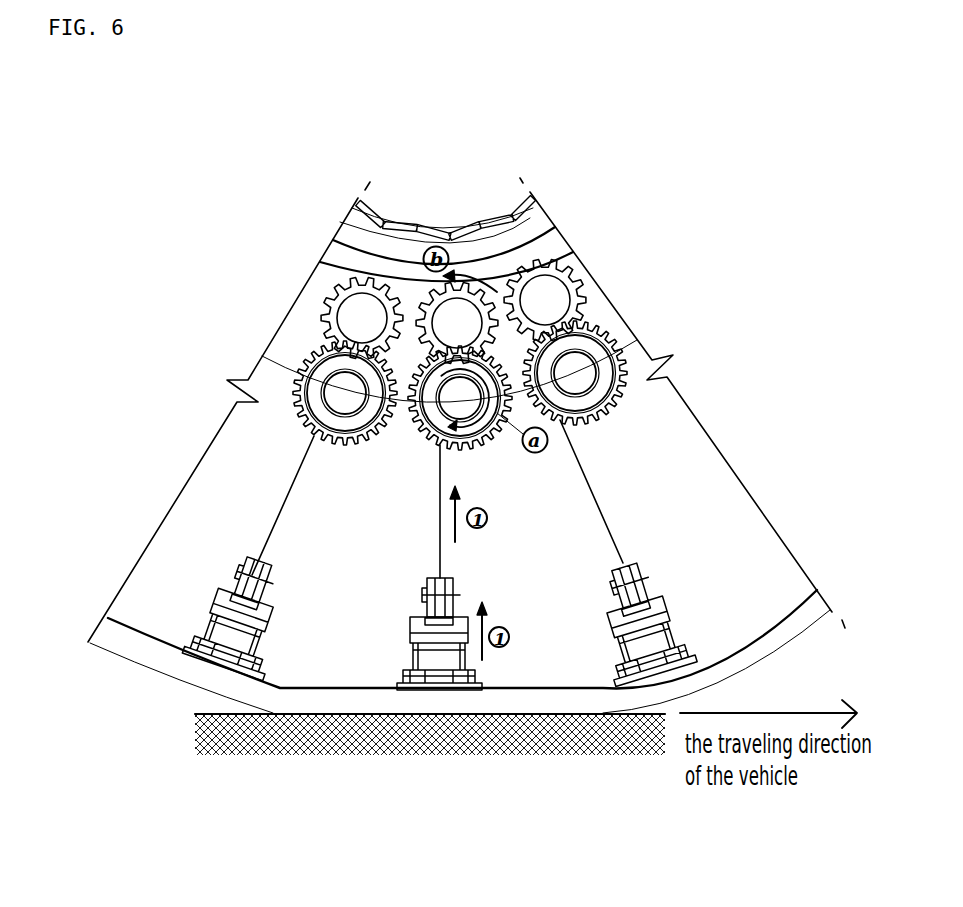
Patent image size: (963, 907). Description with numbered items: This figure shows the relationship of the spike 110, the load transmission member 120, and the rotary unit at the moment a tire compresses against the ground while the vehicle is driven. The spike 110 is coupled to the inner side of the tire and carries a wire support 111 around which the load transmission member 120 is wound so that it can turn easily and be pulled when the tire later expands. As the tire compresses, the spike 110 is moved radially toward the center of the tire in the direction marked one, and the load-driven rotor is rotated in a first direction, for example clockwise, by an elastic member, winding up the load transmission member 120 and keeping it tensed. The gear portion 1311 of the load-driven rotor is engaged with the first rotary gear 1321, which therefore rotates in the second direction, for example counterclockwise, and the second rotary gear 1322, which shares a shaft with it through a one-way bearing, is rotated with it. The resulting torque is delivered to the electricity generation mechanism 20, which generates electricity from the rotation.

The electricity generation mechanism 20 is at (470, 217).
The gear portion 1311 is at (325, 385).
The first rotary gear 1321 is at (358, 296).
The second rotary gear 1322 is at (417, 293).
The load transmission member 120 is at (438, 542).
The spike 110 is at (415, 658).
The wire support 111 is at (428, 605).